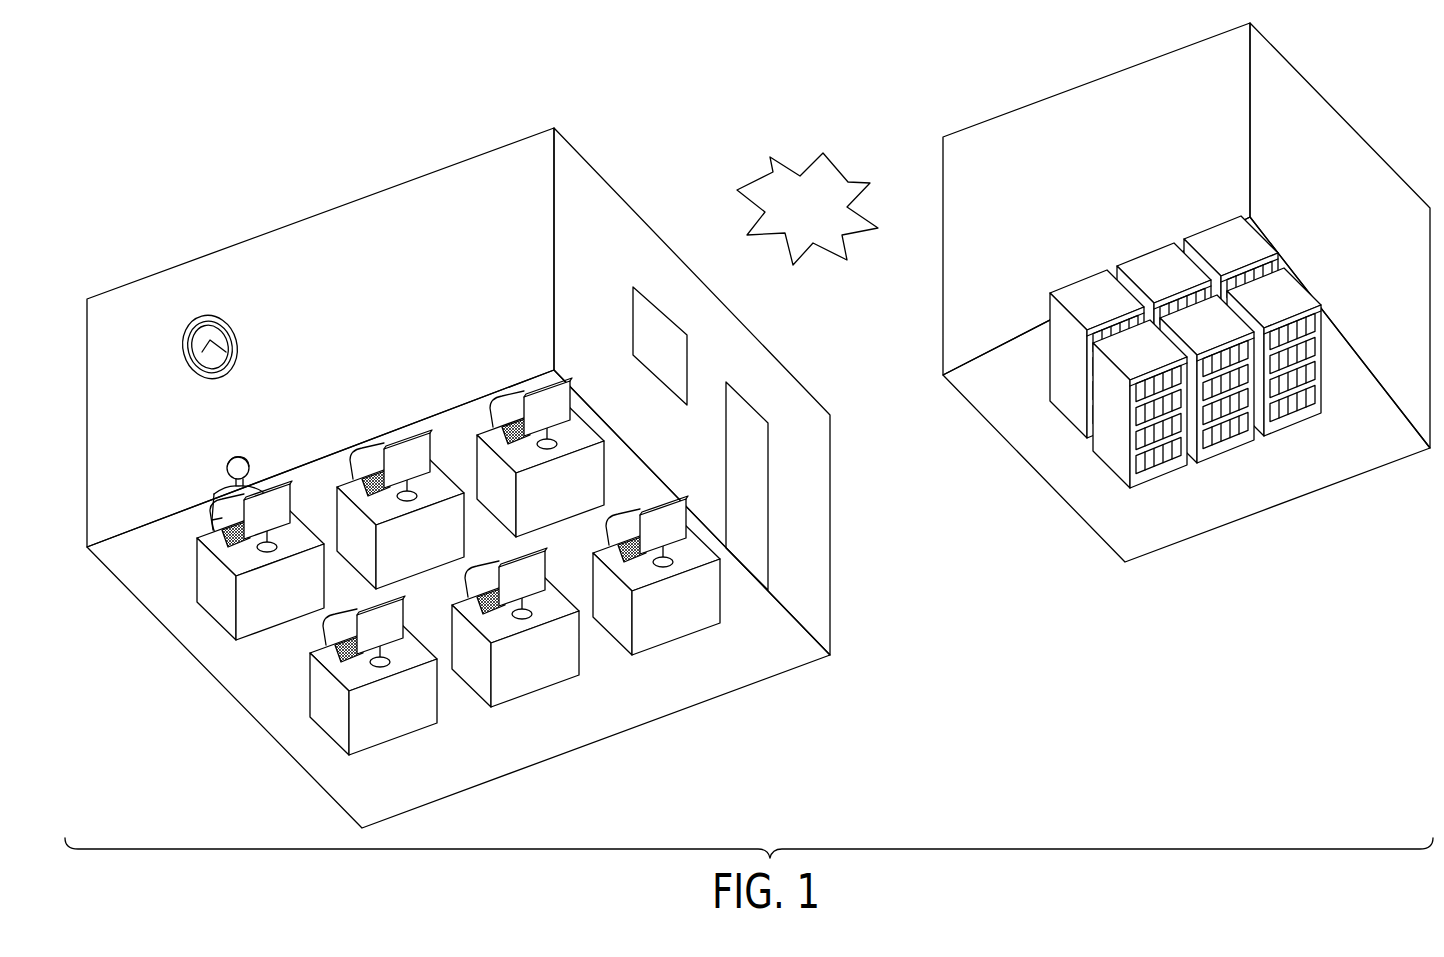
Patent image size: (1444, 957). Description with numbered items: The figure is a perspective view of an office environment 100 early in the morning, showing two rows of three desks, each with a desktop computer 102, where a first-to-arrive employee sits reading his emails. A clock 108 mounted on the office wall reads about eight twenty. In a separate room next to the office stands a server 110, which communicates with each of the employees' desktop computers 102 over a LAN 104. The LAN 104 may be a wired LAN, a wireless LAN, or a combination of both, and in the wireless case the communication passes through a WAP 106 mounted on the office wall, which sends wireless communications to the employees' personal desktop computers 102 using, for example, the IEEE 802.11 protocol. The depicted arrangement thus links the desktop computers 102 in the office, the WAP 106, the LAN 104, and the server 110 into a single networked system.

The network environment 100 is at (252, 150).
The desktop computers 102 is at (411, 442).
The LAN 104 is at (785, 170).
The WAP 106 is at (663, 383).
The clock 108 is at (229, 342).
The server 110 is at (1153, 252).